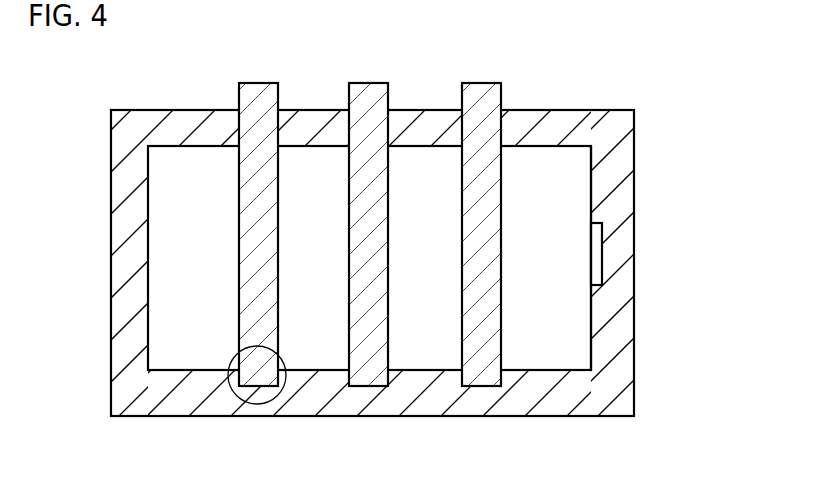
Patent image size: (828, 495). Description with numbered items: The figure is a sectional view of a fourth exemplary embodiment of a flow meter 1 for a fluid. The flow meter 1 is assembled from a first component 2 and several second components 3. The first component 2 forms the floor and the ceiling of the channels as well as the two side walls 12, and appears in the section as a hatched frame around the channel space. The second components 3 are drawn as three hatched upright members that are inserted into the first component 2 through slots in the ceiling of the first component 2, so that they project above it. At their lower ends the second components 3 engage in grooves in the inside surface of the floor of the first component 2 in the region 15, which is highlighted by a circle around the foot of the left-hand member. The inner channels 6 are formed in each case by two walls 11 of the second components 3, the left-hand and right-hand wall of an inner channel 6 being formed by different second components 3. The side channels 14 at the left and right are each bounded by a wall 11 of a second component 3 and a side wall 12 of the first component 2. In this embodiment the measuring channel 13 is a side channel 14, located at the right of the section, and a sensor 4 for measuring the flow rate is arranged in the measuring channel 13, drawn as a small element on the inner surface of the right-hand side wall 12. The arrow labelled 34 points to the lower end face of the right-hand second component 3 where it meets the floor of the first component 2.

The flow meter 1 is at (414, 251).
The first component 2 is at (414, 219).
The second component 3 is at (398, 204).
The sensor 4 is at (602, 250).
The inner channel 6 is at (319, 348).
The wall 11 is at (270, 237).
The side wall 12 is at (597, 347).
The measuring channel 13 is at (555, 343).
The side channel 14 is at (178, 167).
The region 15 is at (267, 385).
The piston end face 34 is at (475, 386).